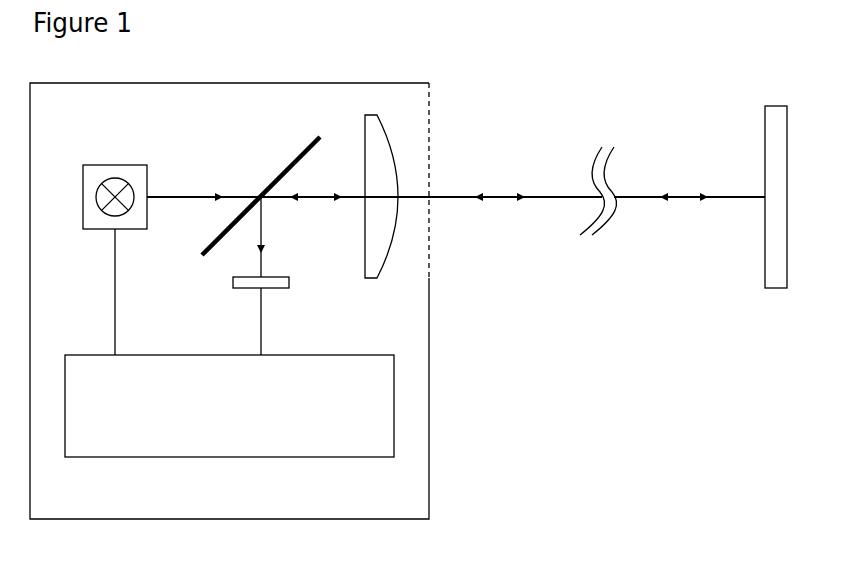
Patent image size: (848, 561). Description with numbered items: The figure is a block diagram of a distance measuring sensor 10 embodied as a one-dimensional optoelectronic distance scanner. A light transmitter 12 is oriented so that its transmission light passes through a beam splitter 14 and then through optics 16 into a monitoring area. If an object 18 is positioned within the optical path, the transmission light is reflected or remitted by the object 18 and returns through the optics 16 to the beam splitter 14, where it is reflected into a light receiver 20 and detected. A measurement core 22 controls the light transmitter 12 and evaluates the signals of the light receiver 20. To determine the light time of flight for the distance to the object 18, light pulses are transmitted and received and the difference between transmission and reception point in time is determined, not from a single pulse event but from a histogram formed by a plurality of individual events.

The distance measuring sensor 10 is at (558, 72).
The light transmitter 12 is at (110, 170).
The beam splitter 14 is at (285, 170).
The optics 16 is at (372, 117).
The object 18 is at (765, 106).
The light receiver 20 is at (287, 276).
The measurement core 22 is at (105, 459).